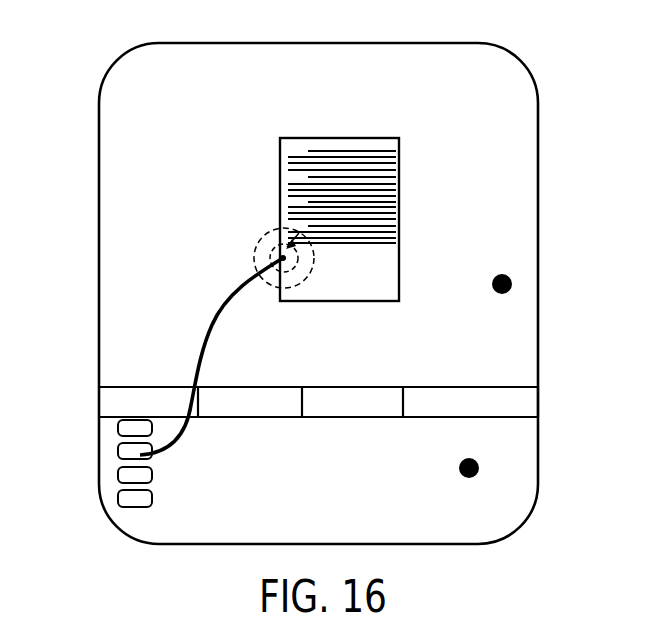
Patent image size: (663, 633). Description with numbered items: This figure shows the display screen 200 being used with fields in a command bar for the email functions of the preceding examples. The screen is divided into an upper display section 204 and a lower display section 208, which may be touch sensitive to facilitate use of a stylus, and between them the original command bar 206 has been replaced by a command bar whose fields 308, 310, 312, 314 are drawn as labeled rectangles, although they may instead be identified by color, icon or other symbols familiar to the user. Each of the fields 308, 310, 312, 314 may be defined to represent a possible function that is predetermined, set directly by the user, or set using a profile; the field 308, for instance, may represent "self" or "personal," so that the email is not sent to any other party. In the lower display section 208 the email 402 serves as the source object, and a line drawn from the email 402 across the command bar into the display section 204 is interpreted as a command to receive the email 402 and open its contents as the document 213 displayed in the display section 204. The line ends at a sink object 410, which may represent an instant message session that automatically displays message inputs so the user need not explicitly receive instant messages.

The display screen 200 is at (86, 56).
The display section 204 is at (499, 274).
The command bar 206 is at (478, 386).
The display section 208 is at (466, 479).
The document 213 is at (339, 137).
The field 308 is at (133, 412).
The field 310 is at (235, 412).
The field 312 is at (337, 412).
The field 314 is at (437, 412).
The email 402 is at (118, 452).
The sink object 410 is at (202, 338).